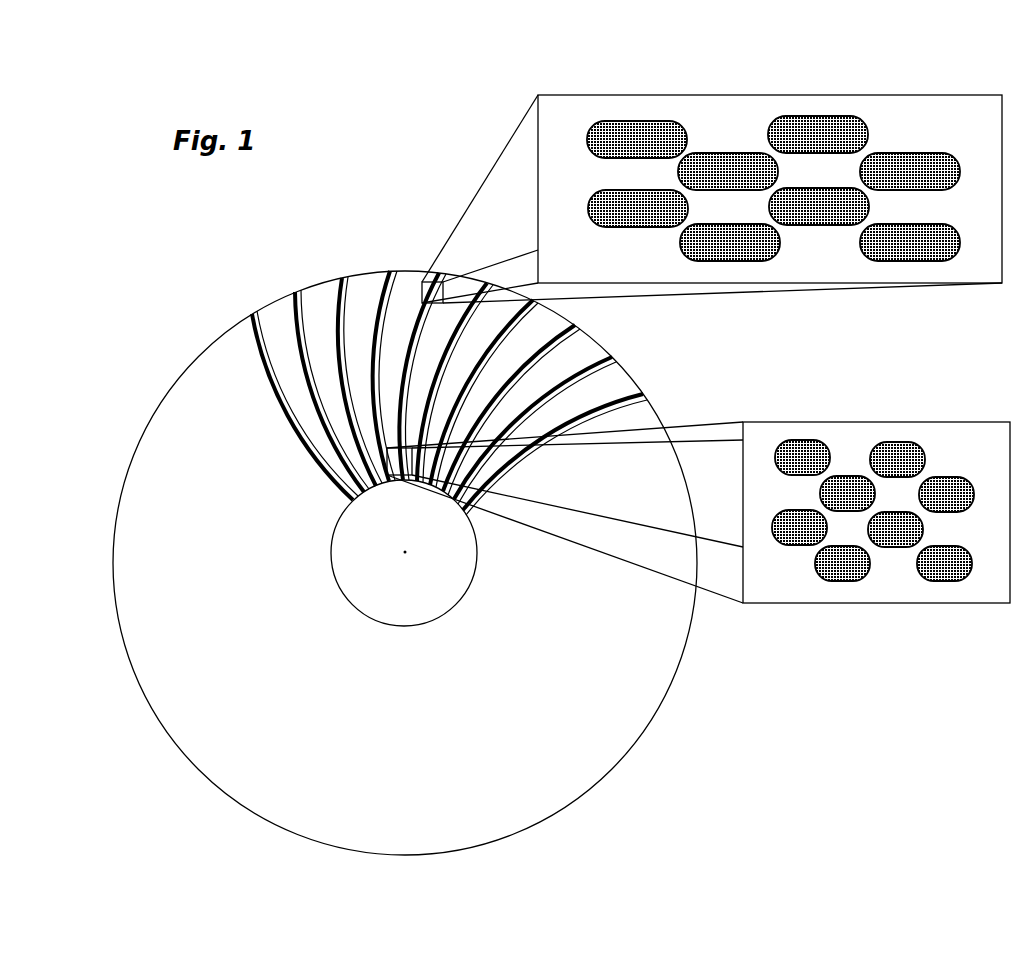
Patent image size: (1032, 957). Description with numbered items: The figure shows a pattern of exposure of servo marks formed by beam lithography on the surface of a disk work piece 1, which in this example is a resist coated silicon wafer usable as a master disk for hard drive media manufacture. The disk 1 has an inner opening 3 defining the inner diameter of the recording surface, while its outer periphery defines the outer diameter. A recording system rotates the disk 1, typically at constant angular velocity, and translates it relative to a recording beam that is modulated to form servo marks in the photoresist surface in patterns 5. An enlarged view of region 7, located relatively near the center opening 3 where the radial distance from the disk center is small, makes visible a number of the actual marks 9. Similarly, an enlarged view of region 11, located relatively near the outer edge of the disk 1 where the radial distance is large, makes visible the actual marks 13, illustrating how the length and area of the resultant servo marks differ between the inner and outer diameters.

The disk work piece 1 is at (633, 738).
The inner opening 3 is at (343, 588).
The patterns 5 is at (273, 383).
The region 7 is at (782, 432).
The marks 9 is at (905, 442).
The region 11 is at (706, 95).
The marks 13 is at (813, 123).